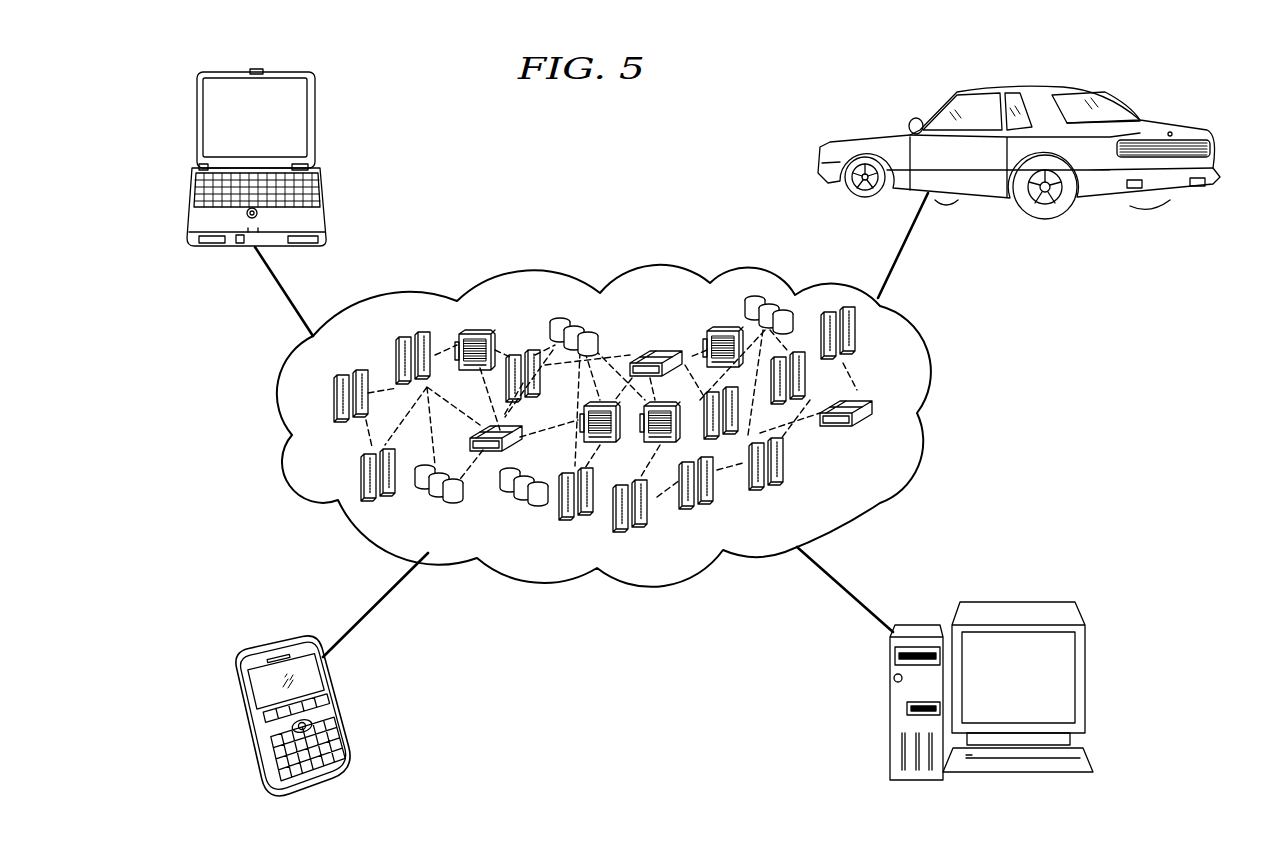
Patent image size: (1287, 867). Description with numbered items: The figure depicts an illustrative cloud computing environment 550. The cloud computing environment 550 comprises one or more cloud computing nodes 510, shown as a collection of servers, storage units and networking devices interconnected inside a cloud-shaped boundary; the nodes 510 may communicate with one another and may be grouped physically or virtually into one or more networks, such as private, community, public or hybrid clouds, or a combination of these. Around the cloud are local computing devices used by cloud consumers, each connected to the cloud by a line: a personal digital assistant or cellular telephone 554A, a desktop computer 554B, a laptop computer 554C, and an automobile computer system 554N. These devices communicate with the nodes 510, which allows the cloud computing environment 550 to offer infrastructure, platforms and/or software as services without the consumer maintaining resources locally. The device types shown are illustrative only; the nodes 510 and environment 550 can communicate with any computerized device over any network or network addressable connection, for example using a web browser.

The cloud computing nodes 510 is at (885, 432).
The cloud computing environment 550 is at (930, 356).
The personal digital assistant (PDA) or cellular telephone 554A is at (241, 700).
The desktop computer 554B is at (1020, 601).
The laptop computer 554C is at (197, 112).
The automobile computer system 554N is at (1185, 122).